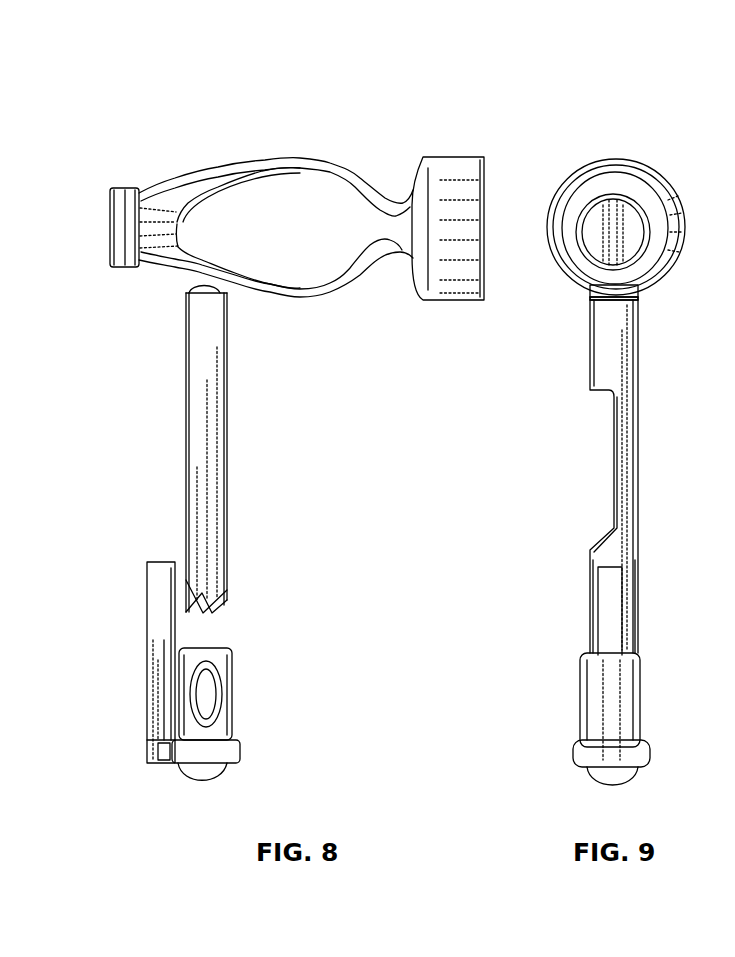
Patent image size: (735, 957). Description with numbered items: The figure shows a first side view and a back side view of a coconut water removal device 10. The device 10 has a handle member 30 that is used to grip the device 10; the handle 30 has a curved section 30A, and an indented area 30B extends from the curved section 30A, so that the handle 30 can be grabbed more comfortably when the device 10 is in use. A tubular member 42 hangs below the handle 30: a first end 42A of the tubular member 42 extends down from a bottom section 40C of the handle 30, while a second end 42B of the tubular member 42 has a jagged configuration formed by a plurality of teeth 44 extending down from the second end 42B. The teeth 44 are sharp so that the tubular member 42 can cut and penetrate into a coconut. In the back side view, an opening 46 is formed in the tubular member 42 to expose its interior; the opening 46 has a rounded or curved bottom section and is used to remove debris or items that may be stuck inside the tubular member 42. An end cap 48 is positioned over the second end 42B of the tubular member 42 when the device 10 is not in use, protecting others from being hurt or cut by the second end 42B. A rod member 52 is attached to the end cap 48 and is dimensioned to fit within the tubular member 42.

In FIG. 8, the coconut water removal device 10 is at (189, 101).
In FIG. 9, the coconut water removal device 10 is at (615, 122).
In FIG. 8, the handle member 30 is at (297, 194).
In FIG. 9, the handle member 30 is at (625, 160).
In FIG. 8, the curved section 30A is at (327, 165).
In FIG. 8, the indented area 30B is at (390, 197).
In FIG. 8, the bottom section 40C is at (186, 293).
In FIG. 9, the bottom section 40C is at (590, 300).
In FIG. 8, the tubular member 42 is at (262, 453).
In FIG. 9, the tubular member 42 is at (628, 477).
In FIG. 8, the first end 42A is at (232, 346).
In FIG. 9, the first end 42A is at (612, 353).
In FIG. 8, the second end 42B is at (225, 560).
In FIG. 9, the second end 42B is at (630, 552).
In FIG. 8, the teeth 44 is at (225, 612).
In FIG. 9, the teeth 44 is at (634, 613).
In FIG. 9, the opening 46 is at (610, 455).
In FIG. 8, the end cap 48 is at (232, 731).
In FIG. 9, the end cap 48 is at (582, 732).
In FIG. 8, the rod member 52 is at (157, 637).
In FIG. 9, the rod member 52 is at (593, 618).